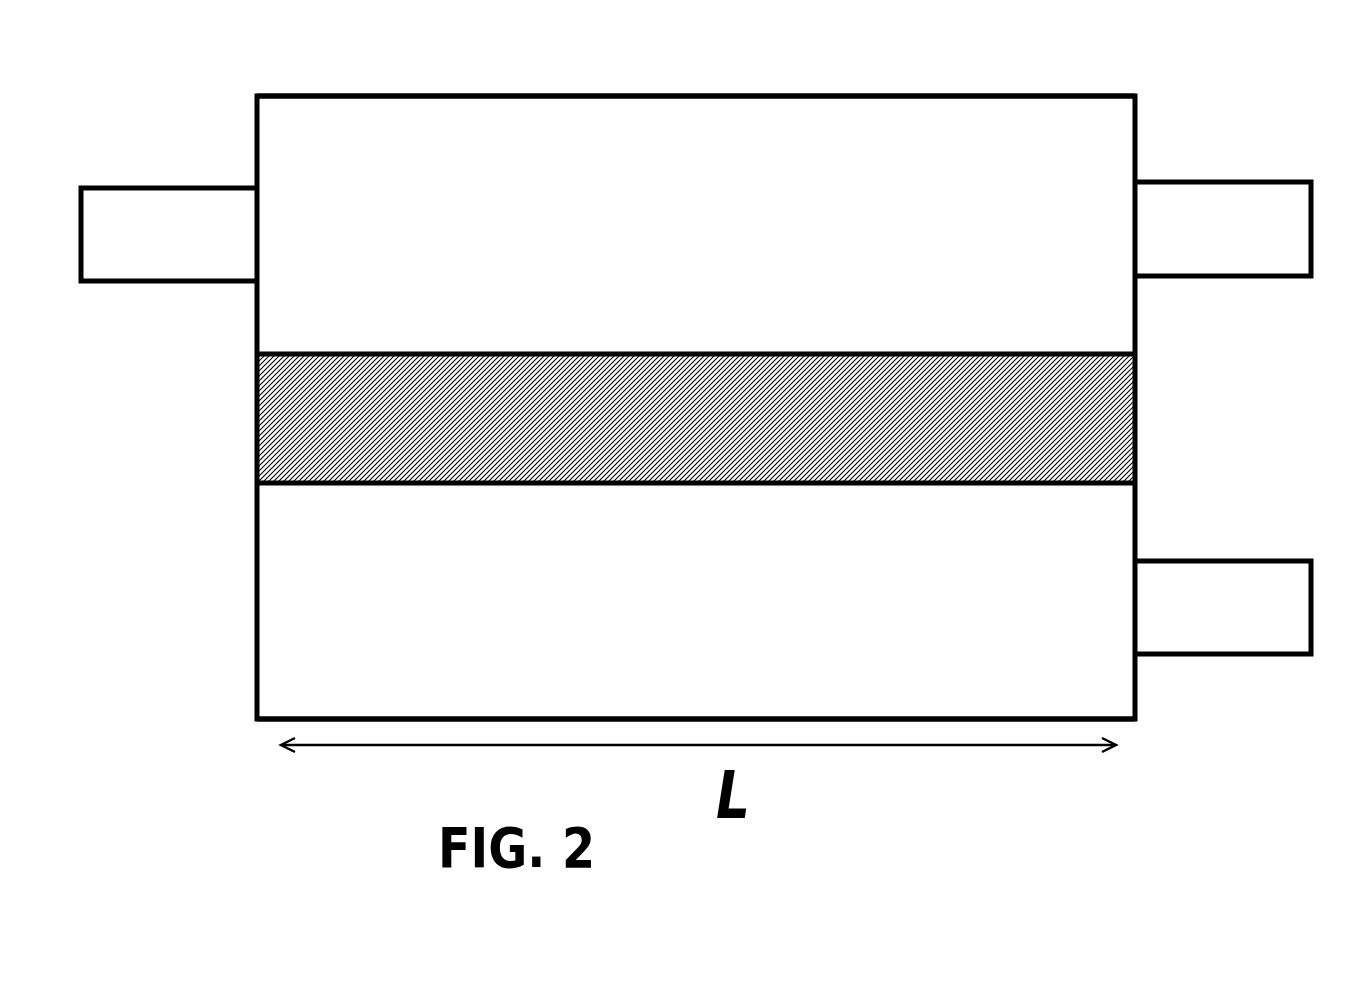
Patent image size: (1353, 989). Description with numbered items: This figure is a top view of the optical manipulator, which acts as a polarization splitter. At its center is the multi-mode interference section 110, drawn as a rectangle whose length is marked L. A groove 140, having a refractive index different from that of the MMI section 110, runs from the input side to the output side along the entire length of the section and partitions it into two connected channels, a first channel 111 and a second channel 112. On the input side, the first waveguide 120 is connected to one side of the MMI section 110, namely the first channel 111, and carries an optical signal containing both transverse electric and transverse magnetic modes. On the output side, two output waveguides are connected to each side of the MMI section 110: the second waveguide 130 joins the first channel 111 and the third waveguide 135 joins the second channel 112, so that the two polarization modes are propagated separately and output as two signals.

The multi-mode interference section 110 is at (256, 572).
The first channel 111 is at (490, 122).
The second channel 112 is at (940, 667).
The first waveguide 120 is at (160, 206).
The second waveguide 130 is at (1215, 182).
The third waveguide 135 is at (1263, 565).
The groove 140 is at (256, 424).